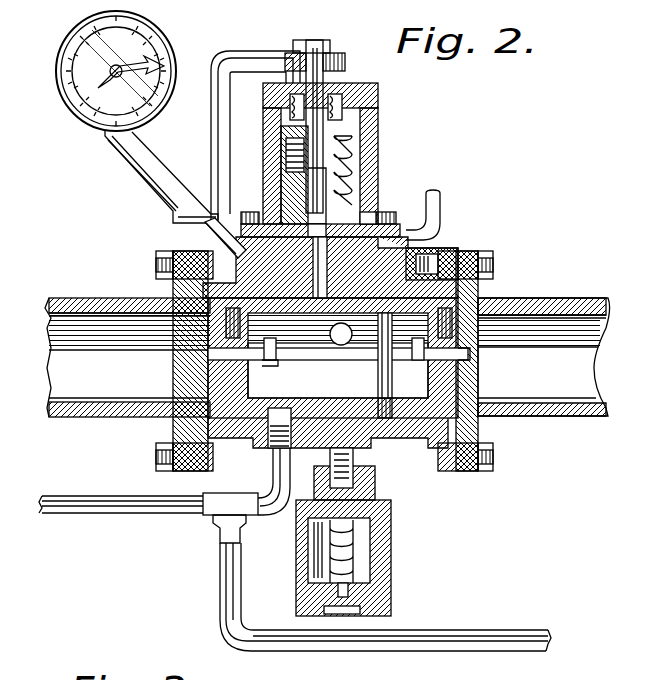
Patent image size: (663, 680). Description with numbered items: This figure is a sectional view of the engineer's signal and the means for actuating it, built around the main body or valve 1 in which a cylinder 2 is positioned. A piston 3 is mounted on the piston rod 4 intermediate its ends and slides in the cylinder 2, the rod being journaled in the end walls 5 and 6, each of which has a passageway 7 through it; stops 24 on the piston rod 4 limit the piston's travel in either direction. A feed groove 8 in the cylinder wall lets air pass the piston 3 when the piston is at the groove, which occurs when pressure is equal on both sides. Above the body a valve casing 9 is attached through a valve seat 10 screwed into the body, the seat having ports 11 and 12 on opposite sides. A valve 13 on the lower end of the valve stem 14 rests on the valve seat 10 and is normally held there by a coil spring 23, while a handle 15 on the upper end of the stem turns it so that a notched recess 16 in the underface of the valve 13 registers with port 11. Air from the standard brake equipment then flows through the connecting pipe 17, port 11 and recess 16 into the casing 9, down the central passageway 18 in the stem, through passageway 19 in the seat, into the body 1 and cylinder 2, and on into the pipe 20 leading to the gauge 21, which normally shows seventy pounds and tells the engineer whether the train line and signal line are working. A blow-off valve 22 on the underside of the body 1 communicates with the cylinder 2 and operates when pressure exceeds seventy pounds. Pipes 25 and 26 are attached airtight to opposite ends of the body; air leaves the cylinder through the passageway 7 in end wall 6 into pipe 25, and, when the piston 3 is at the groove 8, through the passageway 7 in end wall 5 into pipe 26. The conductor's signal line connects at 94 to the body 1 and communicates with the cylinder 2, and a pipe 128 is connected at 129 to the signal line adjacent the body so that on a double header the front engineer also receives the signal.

The main body or valve 1 is at (420, 244).
The cylinder 2 is at (310, 390).
The piston 3 is at (370, 366).
The piston rod 4 is at (294, 358).
The end wall 5 is at (462, 344).
The end wall 6 is at (226, 366).
The passageway 7 is at (445, 380).
The feed groove 8 is at (448, 252).
The valve casing 9 is at (366, 112).
The valve seat 10 is at (232, 248).
The port 11 is at (222, 340).
The port 12 is at (248, 232).
The valve 13 is at (366, 178).
The valve stem 14 is at (310, 77).
The handle 15 is at (205, 85).
The notched recess 16 is at (392, 208).
The connecting pipe 17 is at (388, 218).
The central passageway 18 is at (273, 178).
The passageway 19 is at (323, 267).
The pipe 20 is at (130, 144).
The gauge 21 is at (55, 53).
The blow-off valve 22 is at (384, 520).
The coil spring 23 is at (340, 148).
The stops 24 is at (258, 358).
The pipe 25 is at (86, 290).
The pipe 26 is at (562, 288).
The signal line connection 94 is at (254, 444).
The pipe 128 is at (332, 643).
The connection 129 is at (212, 516).